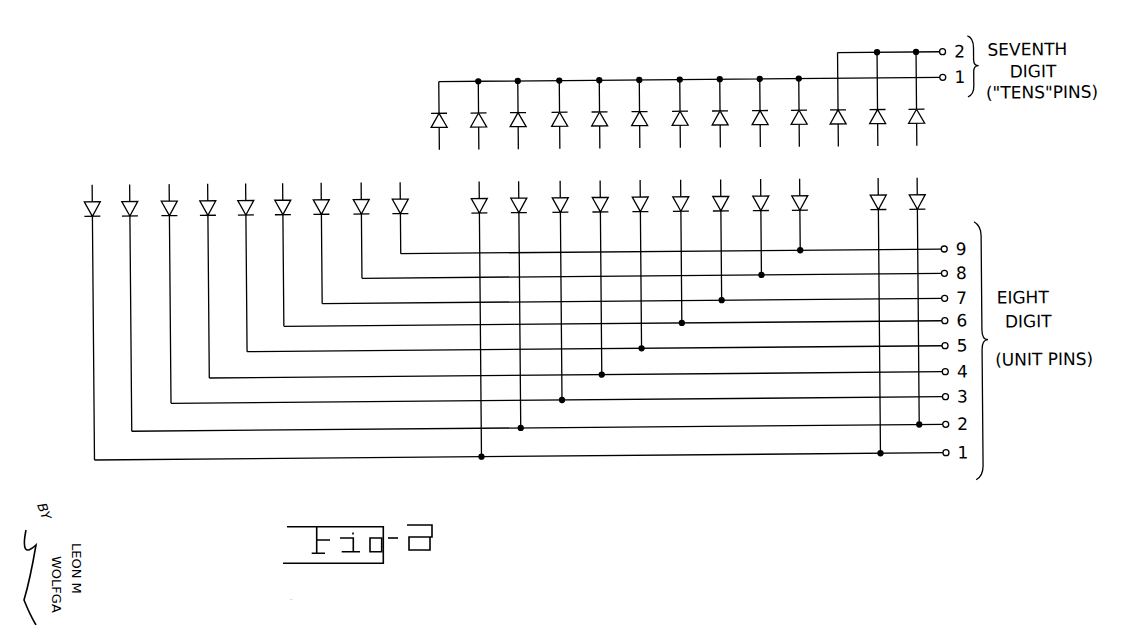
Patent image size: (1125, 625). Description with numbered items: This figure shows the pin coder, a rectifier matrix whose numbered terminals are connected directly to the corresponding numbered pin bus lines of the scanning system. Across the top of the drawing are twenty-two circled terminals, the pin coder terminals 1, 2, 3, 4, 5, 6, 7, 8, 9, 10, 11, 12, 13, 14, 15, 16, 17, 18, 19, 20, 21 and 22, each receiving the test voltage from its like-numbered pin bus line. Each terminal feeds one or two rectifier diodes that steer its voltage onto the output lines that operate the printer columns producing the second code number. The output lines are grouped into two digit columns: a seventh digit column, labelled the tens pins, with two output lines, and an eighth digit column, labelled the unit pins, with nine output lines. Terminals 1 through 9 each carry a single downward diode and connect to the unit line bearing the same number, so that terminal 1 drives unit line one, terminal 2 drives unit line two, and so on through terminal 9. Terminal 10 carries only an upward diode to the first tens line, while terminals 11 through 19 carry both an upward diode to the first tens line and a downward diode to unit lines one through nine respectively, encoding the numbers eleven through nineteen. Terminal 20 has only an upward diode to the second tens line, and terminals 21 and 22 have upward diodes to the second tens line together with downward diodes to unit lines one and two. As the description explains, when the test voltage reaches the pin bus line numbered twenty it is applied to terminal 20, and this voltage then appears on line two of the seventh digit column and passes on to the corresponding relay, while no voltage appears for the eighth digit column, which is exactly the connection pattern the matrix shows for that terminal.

The terminal 1 of the pin coder 1 is at (509, 303).
The terminal 2 of the pin coder 2 is at (527, 289).
The terminal 3 of the pin coder 3 is at (548, 275).
The terminal 4 of the pin coder 4 is at (566, 262).
The terminal 5 of the pin coder 5 is at (585, 249).
The terminal 6 of the pin coder 6 is at (603, 236).
The terminal 7 of the pin coder 7 is at (623, 225).
The terminal 8 of the pin coder 8 is at (643, 212).
The terminal 9 of the pin coder 9 is at (662, 200).
The terminal 10 of the pin coder 10 is at (439, 131).
The terminal 11 of the pin coder 11 is at (479, 269).
The terminal 12 of the pin coder 12 is at (519, 254).
The terminal 13 of the pin coder 13 is at (560, 240).
The terminal 14 of the pin coder 14 is at (600, 228).
The terminal 15 of the pin coder 15 is at (640, 214).
The terminal 16 of the pin coder 16 is at (681, 201).
The terminal 17 of the pin coder 17 is at (721, 190).
The terminal 18 of the pin coder 18 is at (761, 176).
The terminal 19 of the pin coder 19 is at (800, 164).
The terminal 20 of the pin coder 20 is at (838, 115).
The terminal 21 of the pin coder 21 is at (878, 253).
The terminal 22 of the pin coder 22 is at (917, 238).